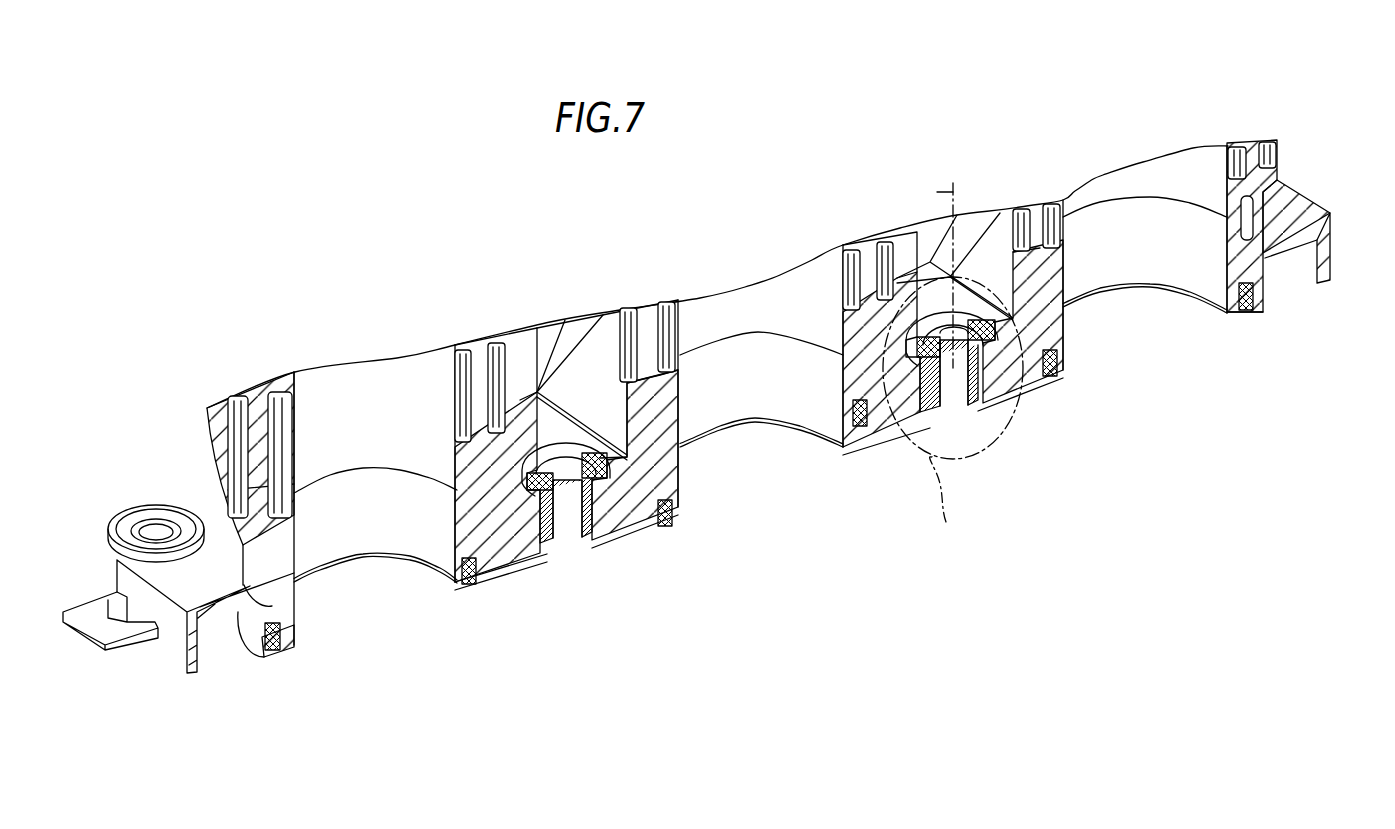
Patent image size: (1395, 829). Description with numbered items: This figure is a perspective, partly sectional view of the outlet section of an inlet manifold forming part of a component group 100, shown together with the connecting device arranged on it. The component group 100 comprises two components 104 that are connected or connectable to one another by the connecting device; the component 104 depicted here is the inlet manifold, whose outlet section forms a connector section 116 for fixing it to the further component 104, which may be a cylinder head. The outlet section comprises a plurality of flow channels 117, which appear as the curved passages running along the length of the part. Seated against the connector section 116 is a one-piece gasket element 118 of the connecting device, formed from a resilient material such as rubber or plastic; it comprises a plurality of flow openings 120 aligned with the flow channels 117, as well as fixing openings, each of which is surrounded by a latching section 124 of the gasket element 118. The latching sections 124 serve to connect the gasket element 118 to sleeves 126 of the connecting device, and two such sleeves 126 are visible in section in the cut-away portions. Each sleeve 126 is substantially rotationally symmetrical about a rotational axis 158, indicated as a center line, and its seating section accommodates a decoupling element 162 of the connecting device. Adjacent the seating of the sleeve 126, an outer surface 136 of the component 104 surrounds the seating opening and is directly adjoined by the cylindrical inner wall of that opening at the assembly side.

The component group 100 is at (1256, 142).
The component 104 is at (1260, 183).
The connector section 116 is at (503, 548).
The flow channel 117 is at (389, 521).
The gasket element 118 is at (630, 523).
The flow opening 120 is at (365, 565).
The latching section 124 is at (983, 383).
The sleeve 126 is at (553, 522).
The outer surface 136 is at (612, 457).
The rotational axis 158 is at (937, 192).
The decoupling element 162 is at (535, 460).